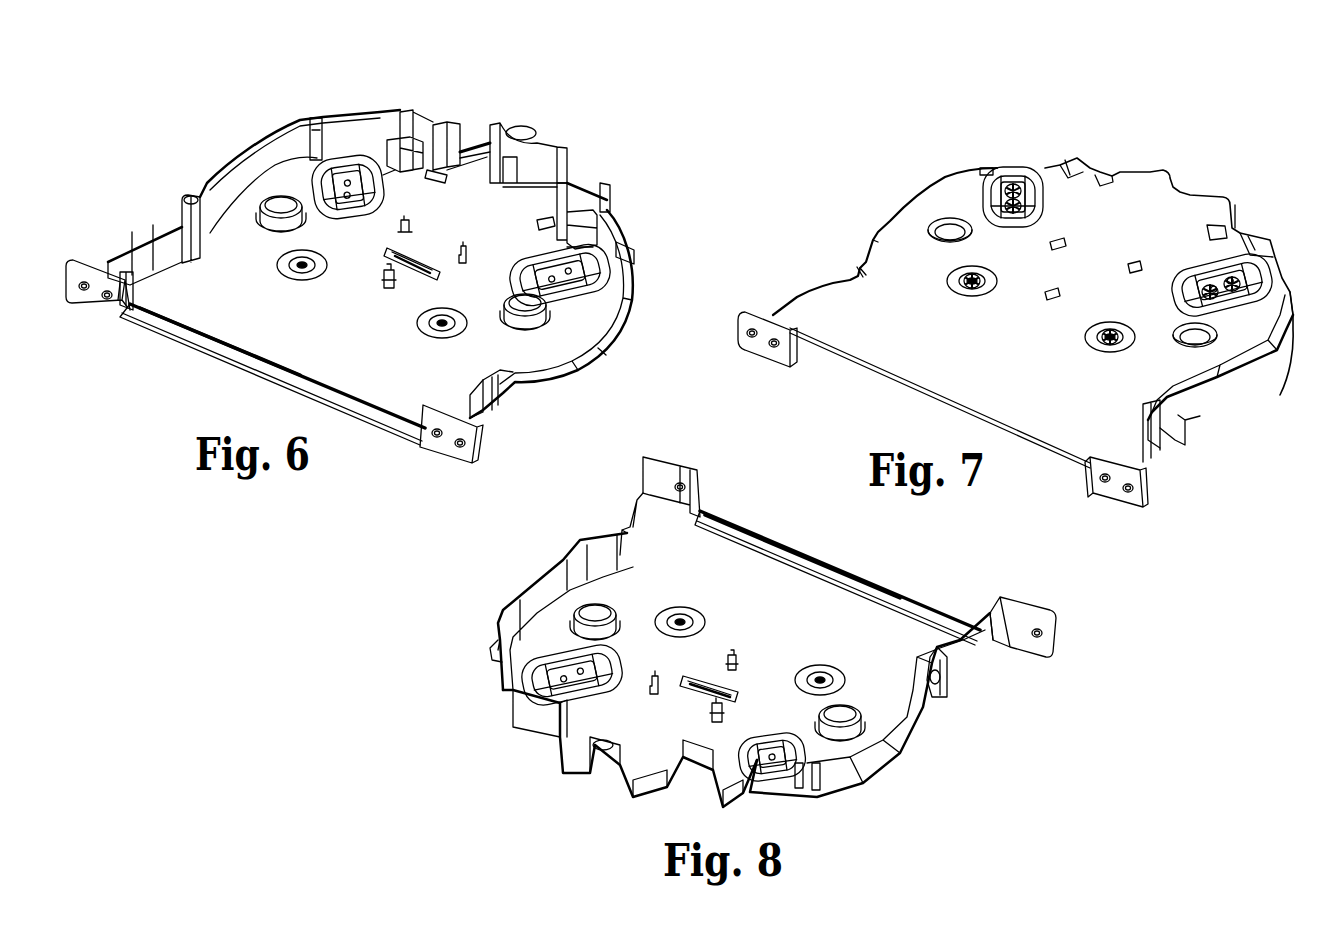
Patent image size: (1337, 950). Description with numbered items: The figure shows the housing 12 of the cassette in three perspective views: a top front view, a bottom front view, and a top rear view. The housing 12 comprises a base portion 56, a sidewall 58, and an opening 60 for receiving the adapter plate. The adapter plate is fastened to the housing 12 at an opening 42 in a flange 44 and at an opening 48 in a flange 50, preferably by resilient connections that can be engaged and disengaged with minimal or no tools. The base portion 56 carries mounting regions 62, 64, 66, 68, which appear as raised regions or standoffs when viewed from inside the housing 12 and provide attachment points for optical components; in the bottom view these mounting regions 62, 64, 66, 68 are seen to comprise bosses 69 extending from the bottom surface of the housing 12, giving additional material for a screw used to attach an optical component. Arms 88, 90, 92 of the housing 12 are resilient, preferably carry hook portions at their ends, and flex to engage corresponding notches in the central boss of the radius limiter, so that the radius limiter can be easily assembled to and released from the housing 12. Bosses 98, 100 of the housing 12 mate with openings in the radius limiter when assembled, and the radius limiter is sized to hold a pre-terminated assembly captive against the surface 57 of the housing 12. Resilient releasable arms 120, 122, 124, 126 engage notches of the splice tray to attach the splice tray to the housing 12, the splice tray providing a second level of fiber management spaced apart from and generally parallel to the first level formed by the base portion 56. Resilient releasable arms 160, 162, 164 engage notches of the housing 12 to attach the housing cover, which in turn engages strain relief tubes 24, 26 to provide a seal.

In FIG. 6, the housing 12 is at (374, 272).
In FIG. 7, the housing 12 is at (994, 333).
In FIG. 8, the housing 12 is at (770, 624).
In FIG. 6, the strain relief tube 24 is at (394, 128).
In FIG. 6, the strain relief tube 26 is at (600, 216).
In FIG. 6, the opening 42 is at (105, 298).
In FIG. 7, the opening 42 is at (772, 348).
In FIG. 6, the flange 44 is at (79, 262).
In FIG. 7, the flange 44 is at (745, 340).
In FIG. 8, the flange 44 is at (1056, 628).
In FIG. 6, the opening 48 is at (437, 437).
In FIG. 7, the opening 48 is at (1103, 483).
In FIG. 8, the opening 48 is at (683, 510).
In FIG. 6, the flange 50 is at (480, 450).
In FIG. 7, the flange 50 is at (1116, 496).
In FIG. 8, the flange 50 is at (652, 470).
In FIG. 6, the base portion 56 is at (335, 339).
In FIG. 7, the base portion 56 is at (1052, 378).
In FIG. 8, the base portion 56 is at (818, 621).
In FIG. 6, the surface 57 is at (206, 322).
In FIG. 8, the surface 57 is at (773, 574).
In FIG. 6, the sidewall 58 is at (148, 256).
In FIG. 7, the sidewall 58 is at (1247, 380).
In FIG. 8, the sidewall 58 is at (546, 583).
In FIG. 6, the opening 60 is at (242, 377).
In FIG. 7, the opening 60 is at (932, 398).
In FIG. 8, the opening 60 is at (850, 562).
In FIG. 6, the mounting region 62 is at (276, 136).
In FIG. 8, the mounting region 62 is at (765, 740).
In FIG. 6, the mounting region 64 is at (592, 246).
In FIG. 8, the mounting region 64 is at (610, 666).
In FIG. 6, the mounting region 66 is at (286, 270).
In FIG. 8, the mounting region 66 is at (830, 675).
In FIG. 6, the mounting region 68 is at (430, 330).
In FIG. 8, the mounting region 68 is at (690, 614).
In FIG. 7, the boss 69 is at (1020, 188).
In FIG. 6, the arm 88 is at (377, 291).
In FIG. 8, the arm 88 is at (742, 654).
In FIG. 6, the arm 90 is at (410, 228).
In FIG. 8, the arm 90 is at (720, 720).
In FIG. 6, the arm 92 is at (466, 256).
In FIG. 8, the arm 92 is at (656, 698).
In FIG. 6, the boss 98 is at (268, 222).
In FIG. 8, the boss 98 is at (843, 716).
In FIG. 6, the boss 100 is at (508, 302).
In FIG. 8, the boss 100 is at (596, 612).
In FIG. 6, the resilient releasable arm 120 is at (186, 220).
In FIG. 8, the resilient releasable arm 120 is at (946, 660).
In FIG. 6, the resilient releasable arm 122 is at (318, 117).
In FIG. 8, the resilient releasable arm 122 is at (803, 775).
In FIG. 6, the resilient releasable arm 124 is at (626, 252).
In FIG. 8, the resilient releasable arm 124 is at (498, 640).
In FIG. 6, the resilient releasable arm 126 is at (527, 373).
In FIG. 8, the resilient releasable arm 126 is at (628, 530).
In FIG. 6, the resilient releasable arm 160 is at (172, 280).
In FIG. 6, the resilient releasable arm 162 is at (528, 172).
In FIG. 6, the resilient releasable arm 164 is at (488, 420).